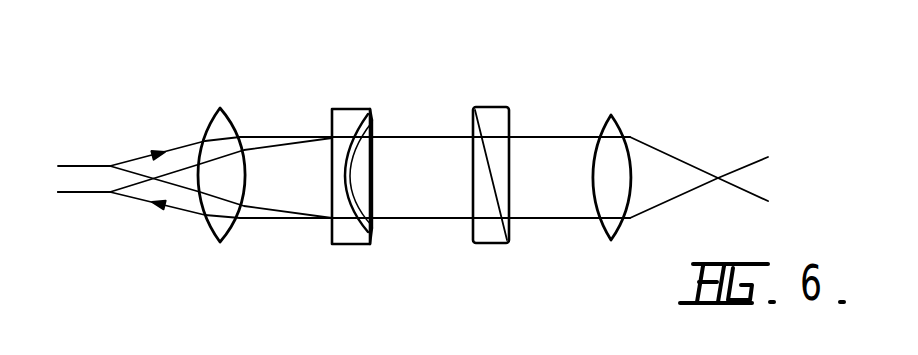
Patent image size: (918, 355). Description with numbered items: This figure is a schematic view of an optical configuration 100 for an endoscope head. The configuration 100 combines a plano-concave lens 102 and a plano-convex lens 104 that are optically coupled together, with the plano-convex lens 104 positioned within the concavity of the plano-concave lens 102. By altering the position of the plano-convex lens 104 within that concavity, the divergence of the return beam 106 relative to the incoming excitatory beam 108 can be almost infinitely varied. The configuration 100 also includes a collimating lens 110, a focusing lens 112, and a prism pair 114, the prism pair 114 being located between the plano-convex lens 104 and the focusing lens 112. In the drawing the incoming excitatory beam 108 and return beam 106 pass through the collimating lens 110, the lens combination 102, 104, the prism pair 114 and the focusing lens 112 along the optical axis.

The optical configuration 100 is at (512, 90).
The plano-concave lens 102 is at (332, 112).
The plano-convex lens 104 is at (367, 230).
The return beam 106 is at (77, 193).
The incoming excitatory beam 108 is at (107, 167).
The collimating lens 110 is at (222, 241).
The focusing lens 112 is at (610, 241).
The prism pair 114 is at (483, 244).